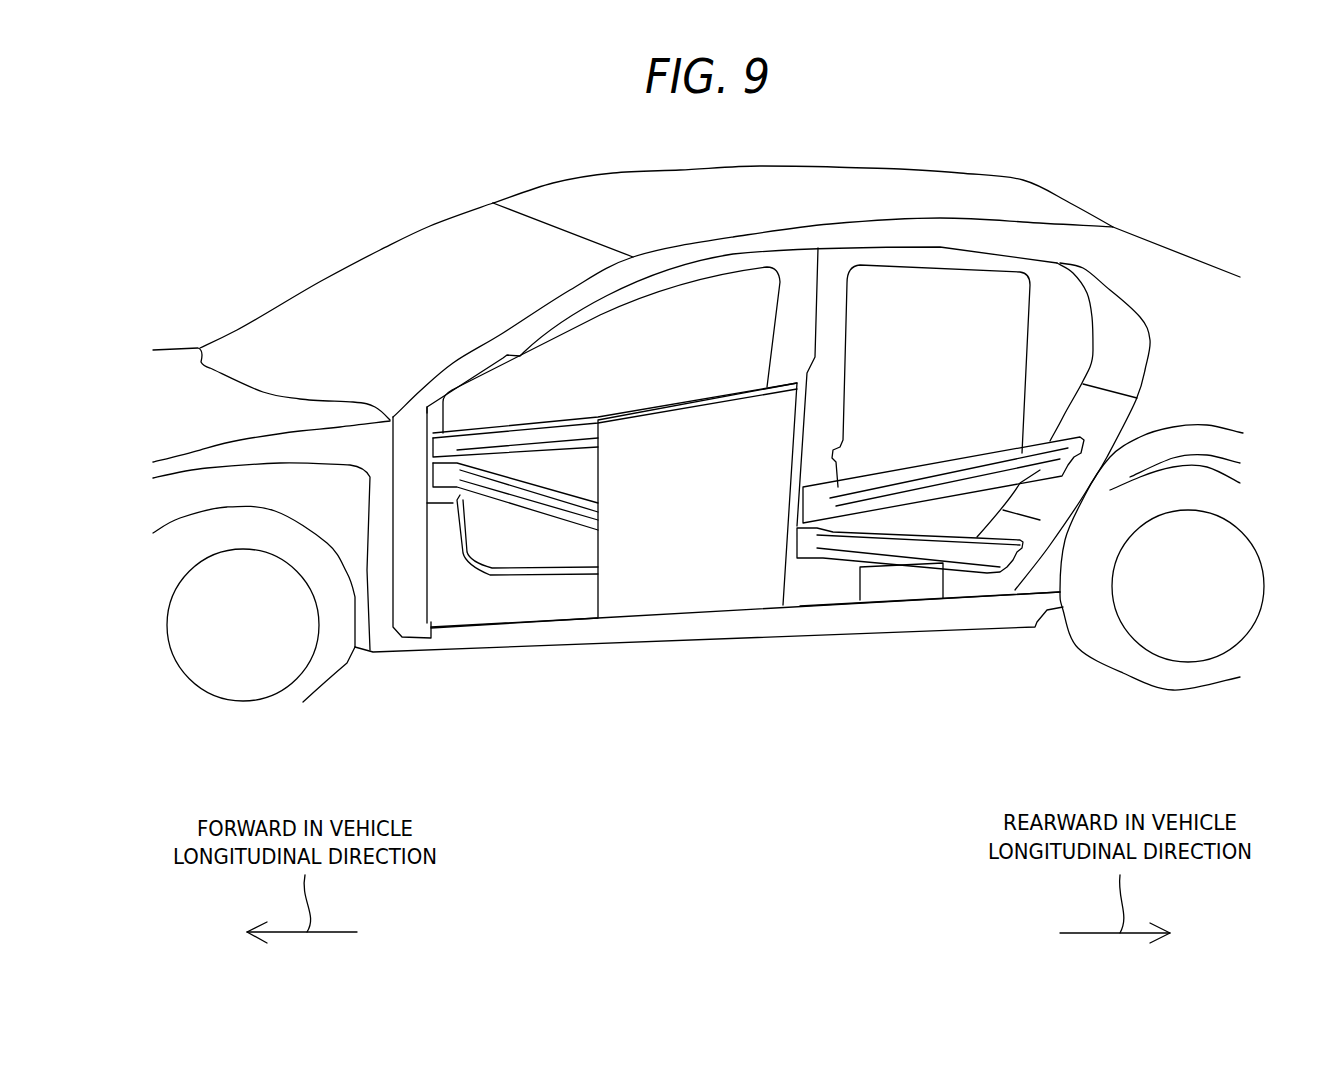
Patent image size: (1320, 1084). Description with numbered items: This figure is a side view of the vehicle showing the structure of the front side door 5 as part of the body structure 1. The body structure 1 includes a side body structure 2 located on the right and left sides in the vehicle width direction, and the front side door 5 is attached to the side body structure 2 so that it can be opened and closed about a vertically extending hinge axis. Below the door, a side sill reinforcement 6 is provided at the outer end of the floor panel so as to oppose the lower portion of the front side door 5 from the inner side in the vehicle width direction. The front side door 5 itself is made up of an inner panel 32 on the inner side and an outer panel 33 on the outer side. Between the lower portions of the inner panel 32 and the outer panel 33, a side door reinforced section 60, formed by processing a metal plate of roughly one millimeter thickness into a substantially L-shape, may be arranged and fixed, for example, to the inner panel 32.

The body structure 1 is at (1175, 186).
The side body structure 2 is at (832, 866).
The front side door 5 is at (727, 620).
The side sill reinforcement 6 is at (907, 630).
The inner panel 32 is at (543, 437).
The outer panel 33 is at (635, 618).
The side door reinforced section 60 is at (547, 628).